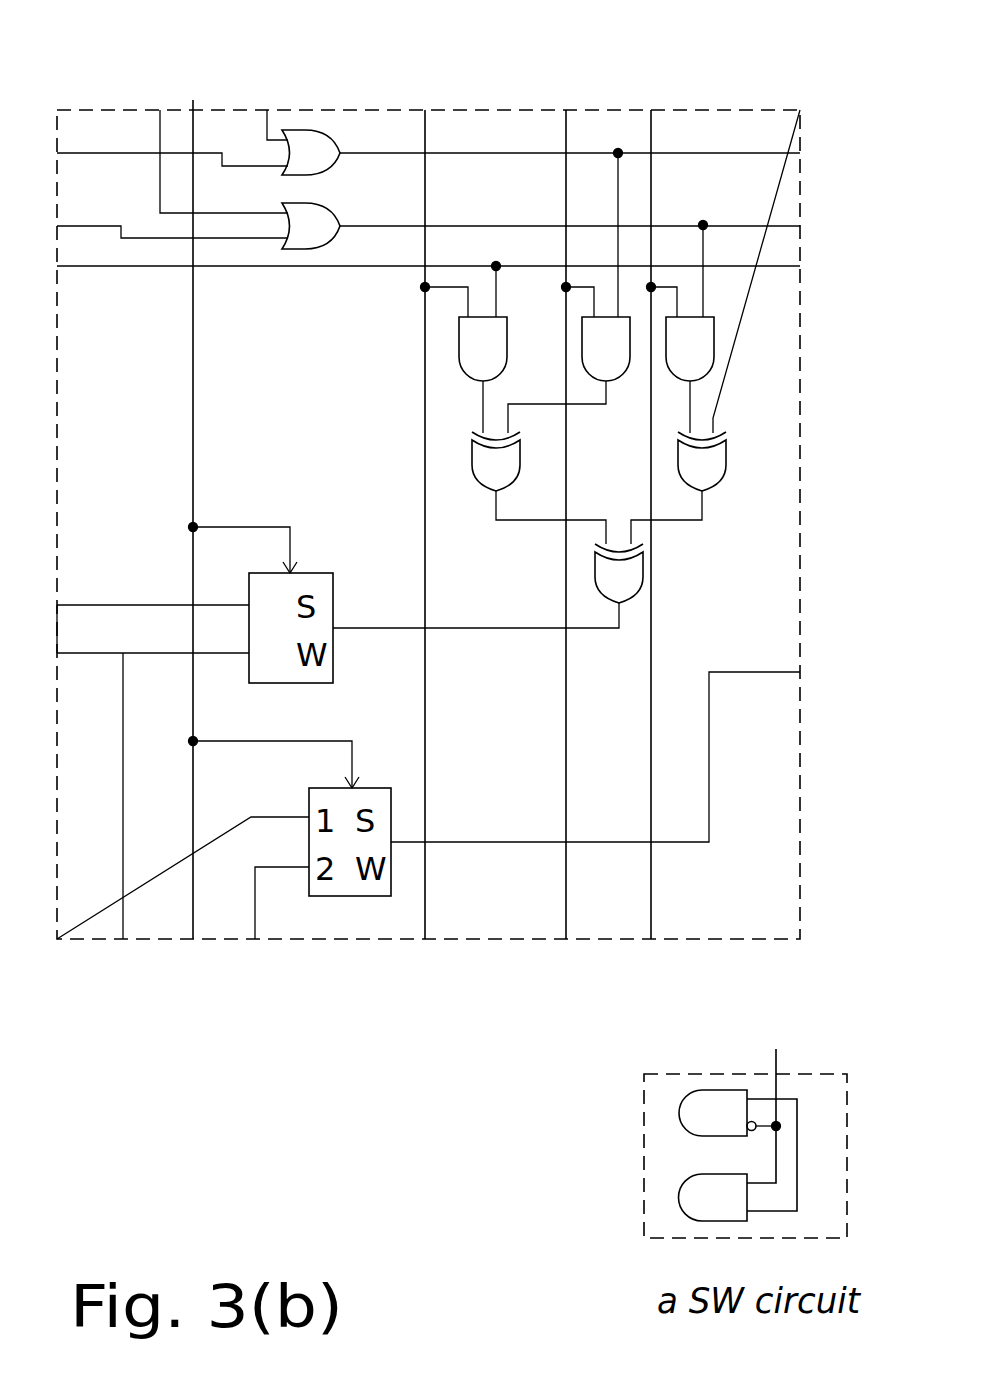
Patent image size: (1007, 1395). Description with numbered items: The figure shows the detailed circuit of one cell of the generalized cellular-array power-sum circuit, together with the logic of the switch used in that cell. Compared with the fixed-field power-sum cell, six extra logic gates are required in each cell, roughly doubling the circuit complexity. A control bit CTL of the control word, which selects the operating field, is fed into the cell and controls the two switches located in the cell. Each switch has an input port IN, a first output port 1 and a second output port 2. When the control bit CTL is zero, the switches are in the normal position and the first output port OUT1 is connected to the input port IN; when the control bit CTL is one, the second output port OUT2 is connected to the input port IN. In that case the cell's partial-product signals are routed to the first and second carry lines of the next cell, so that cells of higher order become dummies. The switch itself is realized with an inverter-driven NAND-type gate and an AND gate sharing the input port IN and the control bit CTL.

The control bit CTL is at (193, 76).
The input port IN is at (797, 1158).
The first output port OUT1 is at (680, 1114).
The second output port OUT2 is at (680, 1197).
The first output port 1 is at (166, 607).
The second output port 2 is at (166, 772).